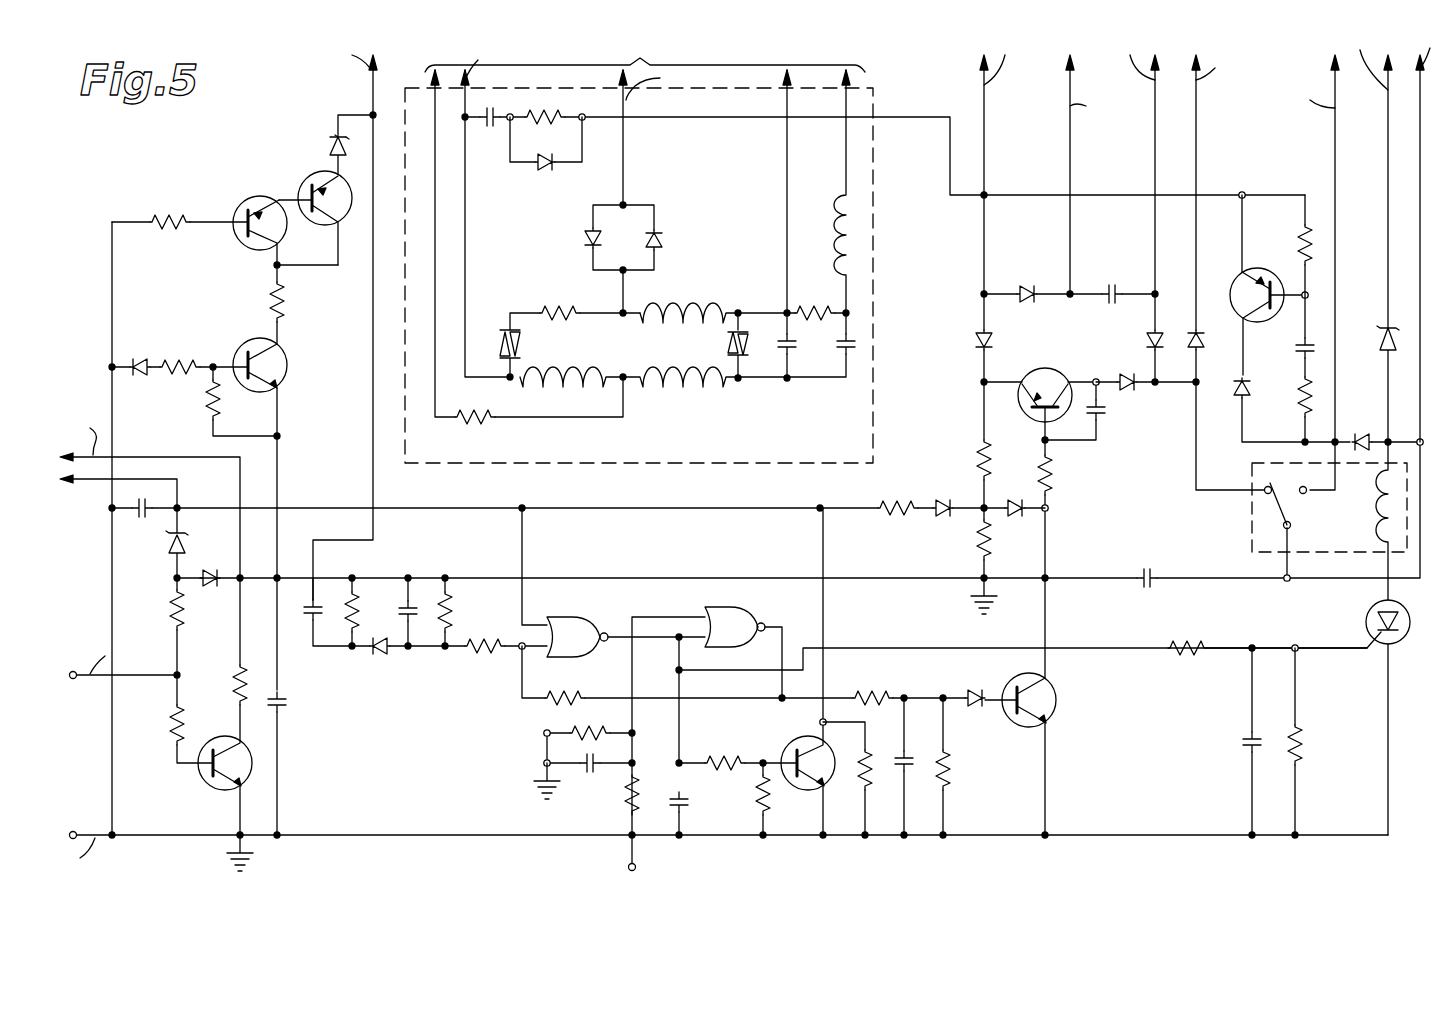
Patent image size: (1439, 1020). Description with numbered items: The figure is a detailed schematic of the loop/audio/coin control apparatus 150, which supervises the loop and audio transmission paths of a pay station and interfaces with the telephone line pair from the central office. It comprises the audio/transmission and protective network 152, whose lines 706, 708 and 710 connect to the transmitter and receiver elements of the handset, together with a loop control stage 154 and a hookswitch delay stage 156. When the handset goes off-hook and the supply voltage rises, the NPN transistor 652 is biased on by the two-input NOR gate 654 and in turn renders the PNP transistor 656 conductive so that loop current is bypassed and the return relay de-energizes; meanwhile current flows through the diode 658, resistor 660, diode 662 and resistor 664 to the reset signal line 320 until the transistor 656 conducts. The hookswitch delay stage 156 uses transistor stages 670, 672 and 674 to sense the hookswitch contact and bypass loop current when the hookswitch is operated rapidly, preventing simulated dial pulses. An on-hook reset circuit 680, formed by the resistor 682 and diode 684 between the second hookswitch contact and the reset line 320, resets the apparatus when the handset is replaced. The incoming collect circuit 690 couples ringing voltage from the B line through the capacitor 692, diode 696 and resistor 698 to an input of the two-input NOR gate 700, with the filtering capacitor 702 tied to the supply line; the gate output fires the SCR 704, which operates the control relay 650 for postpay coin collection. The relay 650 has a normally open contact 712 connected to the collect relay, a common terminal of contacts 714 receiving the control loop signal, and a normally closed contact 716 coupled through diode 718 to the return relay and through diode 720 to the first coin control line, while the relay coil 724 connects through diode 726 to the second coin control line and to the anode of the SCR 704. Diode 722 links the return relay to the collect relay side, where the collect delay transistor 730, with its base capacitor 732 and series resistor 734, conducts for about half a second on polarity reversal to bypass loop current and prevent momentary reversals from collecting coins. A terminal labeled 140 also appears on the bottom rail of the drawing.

The loop/audio/coin control apparatus 150 is at (920, 950).
The audio/transmission and protective network 152 is at (874, 336).
The loop control stage 154 is at (1137, 509).
The hookswitch delay stage 156 is at (175, 302).
The terminal 140 is at (638, 860).
The reset signal line 320 is at (90, 490).
The control relay 650 is at (1308, 552).
The NPN transistor 652 is at (1032, 735).
The two-input NOR gate 654 is at (740, 608).
The PNP transistor 656 is at (1012, 408).
The diode 658 is at (978, 335).
The resistor 660 is at (975, 464).
The diode 662 is at (940, 508).
The resistor 664 is at (895, 518).
The transistor stage 670 is at (292, 180).
The transistor stage 672 is at (230, 212).
The transistor stage 674 is at (340, 338).
The on-hook reset circuit 680 is at (155, 760).
The resistor 682 is at (173, 624).
The diode 684 is at (178, 543).
The incoming collect circuit 690 is at (415, 695).
The capacitor 692 is at (308, 630).
The diode 696 is at (384, 655).
The resistor 698 is at (478, 653).
The two-input NOR gate 700 is at (615, 622).
The filtering capacitor 702 is at (400, 612).
The SCR 704 is at (1368, 620).
The line 706 is at (435, 100).
The line 708 is at (787, 100).
The line 710 is at (846, 100).
The normally open contact 712 is at (1305, 494).
The contacts 714 is at (1265, 520).
The normally closed contact 716 is at (1263, 500).
The diode 718 is at (1140, 343).
The diode 720 is at (1175, 382).
The diode 722 is at (1040, 268).
The relay coil 724 is at (1375, 513).
The diode 726 is at (1375, 336).
The collect delay transistor 730 is at (1288, 260).
The capacitor 732 is at (1295, 357).
The series resistor 734 is at (1300, 393).